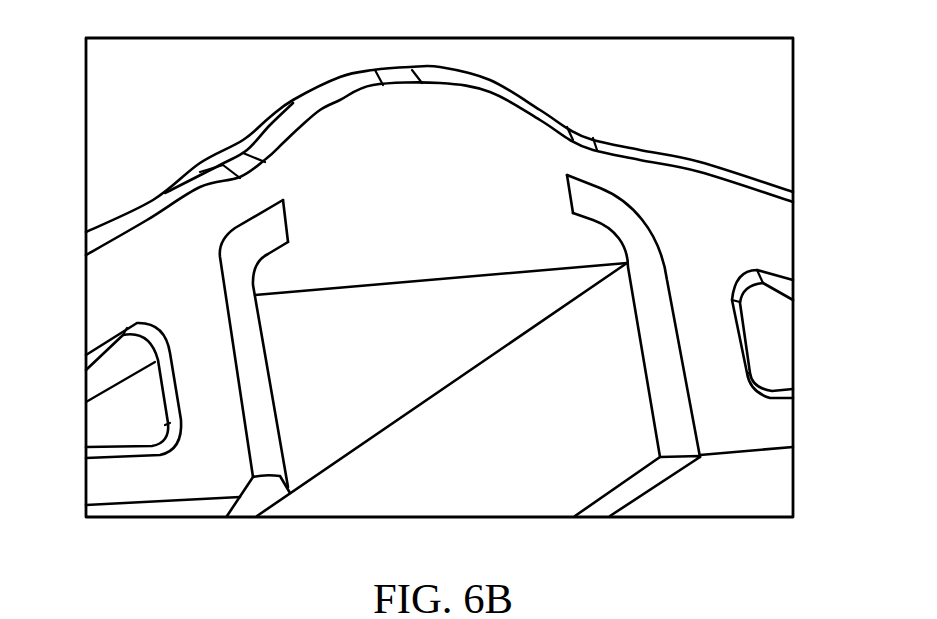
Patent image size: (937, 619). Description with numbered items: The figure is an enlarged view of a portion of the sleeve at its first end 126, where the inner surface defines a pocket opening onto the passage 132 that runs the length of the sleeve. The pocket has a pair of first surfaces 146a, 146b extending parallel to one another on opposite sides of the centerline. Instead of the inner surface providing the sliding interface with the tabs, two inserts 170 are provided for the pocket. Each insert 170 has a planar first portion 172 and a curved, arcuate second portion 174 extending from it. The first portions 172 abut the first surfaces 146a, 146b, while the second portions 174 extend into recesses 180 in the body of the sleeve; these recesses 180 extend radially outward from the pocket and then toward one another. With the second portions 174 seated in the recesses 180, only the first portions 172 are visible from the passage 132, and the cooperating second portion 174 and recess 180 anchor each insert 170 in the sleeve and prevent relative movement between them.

The first end 126 is at (775, 68).
The passage 132 is at (437, 495).
The first surface 146a is at (281, 480).
The first surface 146b is at (694, 436).
The insert 170 is at (215, 358).
The first portion 172 is at (261, 363).
The second portion 174 is at (267, 224).
The recess 180 is at (212, 250).